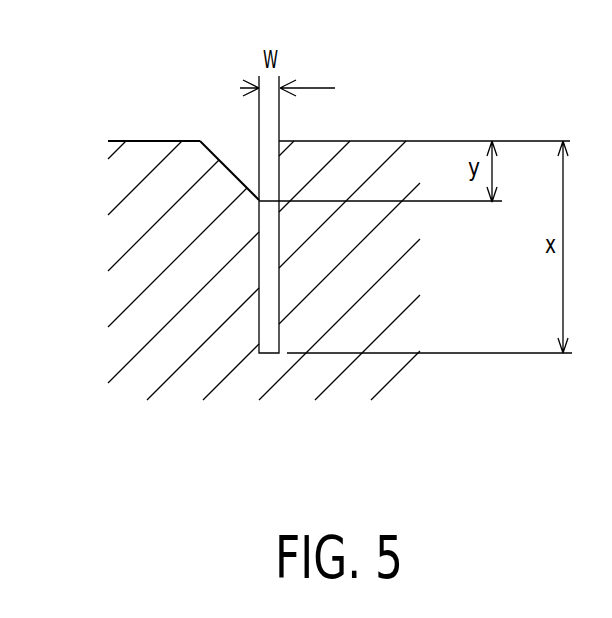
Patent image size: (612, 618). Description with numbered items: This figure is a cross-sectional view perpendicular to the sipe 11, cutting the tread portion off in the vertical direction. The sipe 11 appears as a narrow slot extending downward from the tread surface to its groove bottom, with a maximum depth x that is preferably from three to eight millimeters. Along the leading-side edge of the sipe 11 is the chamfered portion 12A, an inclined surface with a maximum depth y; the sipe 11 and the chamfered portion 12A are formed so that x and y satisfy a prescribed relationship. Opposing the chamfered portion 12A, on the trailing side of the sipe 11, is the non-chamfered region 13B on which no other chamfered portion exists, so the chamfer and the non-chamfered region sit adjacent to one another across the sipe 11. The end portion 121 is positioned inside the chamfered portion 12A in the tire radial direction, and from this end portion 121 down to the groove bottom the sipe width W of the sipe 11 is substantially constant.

The sipe 11 is at (270, 338).
The chamfered portion 12A is at (213, 153).
The end portion 121 is at (257, 207).
The non-chamfered region 13B is at (368, 160).